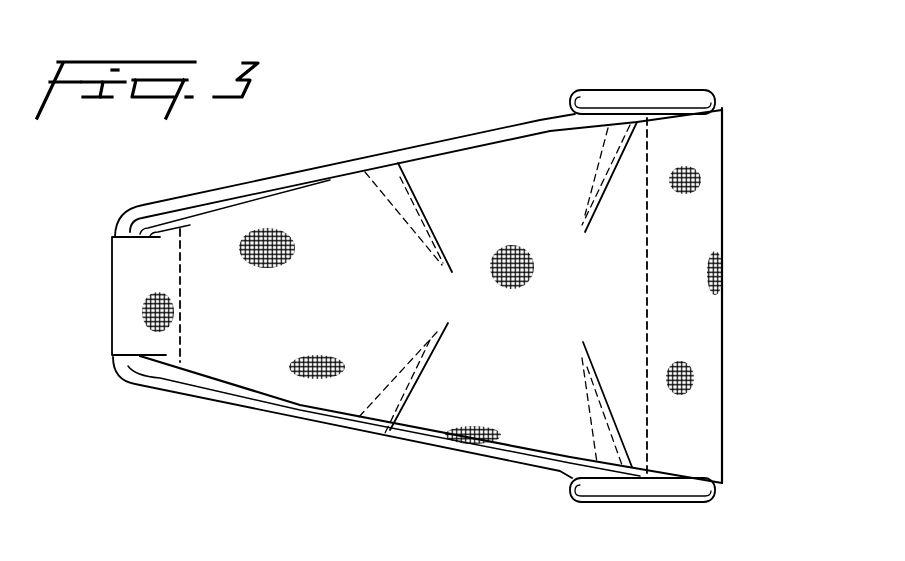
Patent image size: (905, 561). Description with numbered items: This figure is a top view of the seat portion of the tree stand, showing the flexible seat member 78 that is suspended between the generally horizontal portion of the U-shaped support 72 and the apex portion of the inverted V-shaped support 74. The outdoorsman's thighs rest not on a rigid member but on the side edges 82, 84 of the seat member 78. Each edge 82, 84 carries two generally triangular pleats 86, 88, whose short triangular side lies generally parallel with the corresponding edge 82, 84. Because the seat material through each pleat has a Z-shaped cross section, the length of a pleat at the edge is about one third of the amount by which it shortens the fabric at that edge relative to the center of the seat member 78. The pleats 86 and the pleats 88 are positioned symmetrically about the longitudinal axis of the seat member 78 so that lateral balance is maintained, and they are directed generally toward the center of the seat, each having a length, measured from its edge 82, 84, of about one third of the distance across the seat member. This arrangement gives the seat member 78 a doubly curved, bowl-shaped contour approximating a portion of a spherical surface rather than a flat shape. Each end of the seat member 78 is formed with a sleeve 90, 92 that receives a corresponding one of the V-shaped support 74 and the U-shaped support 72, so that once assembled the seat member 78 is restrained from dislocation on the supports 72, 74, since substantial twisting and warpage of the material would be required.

The U-shaped support 72 is at (652, 90).
The V-shaped support 74 is at (216, 393).
The seat member 78 is at (509, 175).
The side edge 82 is at (461, 150).
The side edge 84 is at (486, 455).
The pleat 86 is at (605, 153).
The pleat 88 is at (400, 190).
The sleeve 90 is at (122, 278).
The sleeve 92 is at (710, 234).